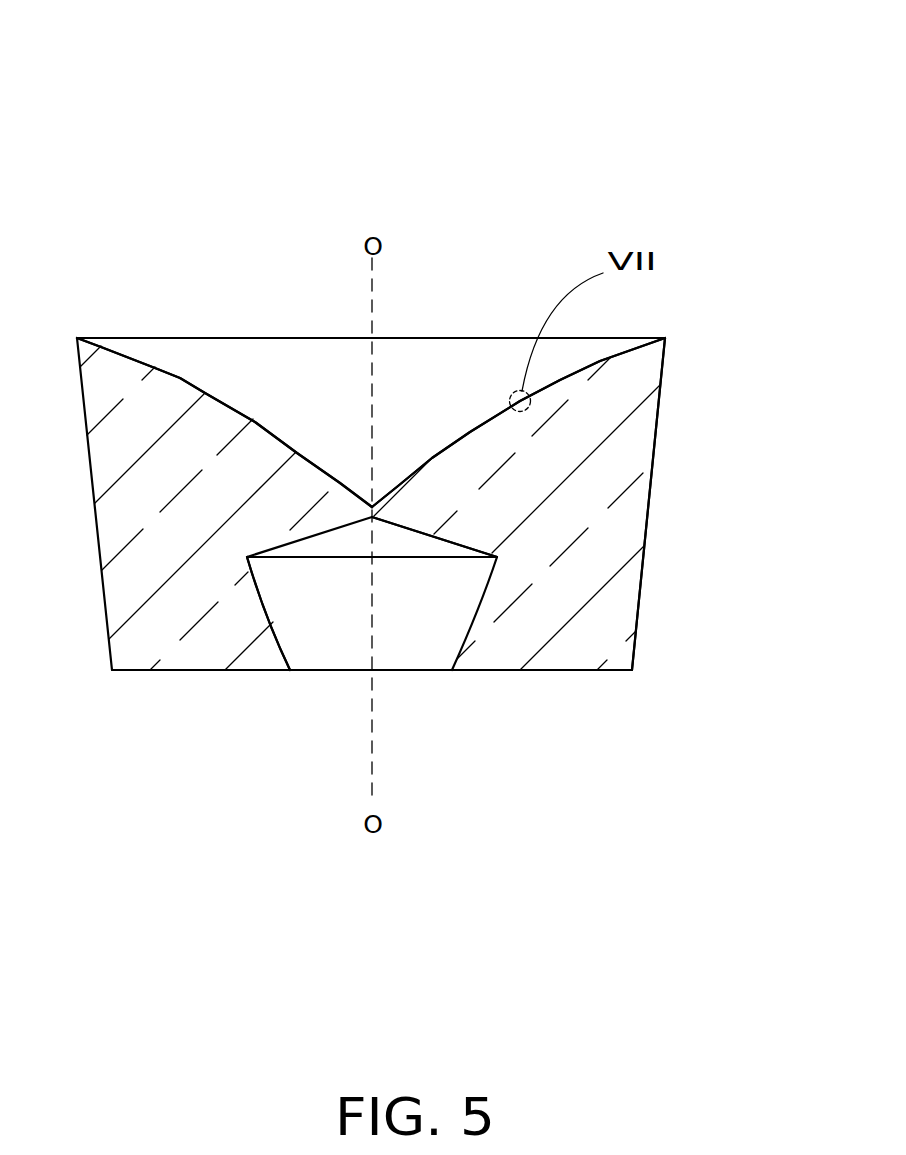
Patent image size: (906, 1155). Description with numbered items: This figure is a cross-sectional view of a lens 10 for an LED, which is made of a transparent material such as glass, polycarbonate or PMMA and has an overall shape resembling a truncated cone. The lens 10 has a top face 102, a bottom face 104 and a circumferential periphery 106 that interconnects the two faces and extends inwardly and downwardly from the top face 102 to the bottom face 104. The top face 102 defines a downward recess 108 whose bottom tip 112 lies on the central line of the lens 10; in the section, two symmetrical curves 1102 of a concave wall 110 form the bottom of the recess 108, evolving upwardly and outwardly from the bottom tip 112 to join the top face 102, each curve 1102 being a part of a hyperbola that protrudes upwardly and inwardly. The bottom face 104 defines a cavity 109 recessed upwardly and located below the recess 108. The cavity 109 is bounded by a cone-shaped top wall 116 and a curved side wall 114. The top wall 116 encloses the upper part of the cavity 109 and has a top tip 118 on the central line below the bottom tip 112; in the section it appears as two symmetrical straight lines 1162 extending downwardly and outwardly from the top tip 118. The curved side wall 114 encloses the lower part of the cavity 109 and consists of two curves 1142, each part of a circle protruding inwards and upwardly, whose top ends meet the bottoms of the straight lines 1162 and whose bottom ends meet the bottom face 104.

The lens 10 is at (440, 33).
The top face 102 is at (272, 335).
The bottom face 104 is at (504, 673).
The circumferential periphery 106 is at (645, 572).
The recess 108 is at (315, 360).
The cavity 109 is at (342, 648).
The concave wall 110 is at (180, 377).
The curves 1102 is at (220, 402).
The bottom tip 112 is at (372, 505).
The curved side wall 114 is at (287, 629).
The curves 1142 is at (270, 597).
The cone-shaped top wall 116 is at (435, 540).
The straight lines 1162 is at (460, 546).
The top tip 118 is at (372, 518).